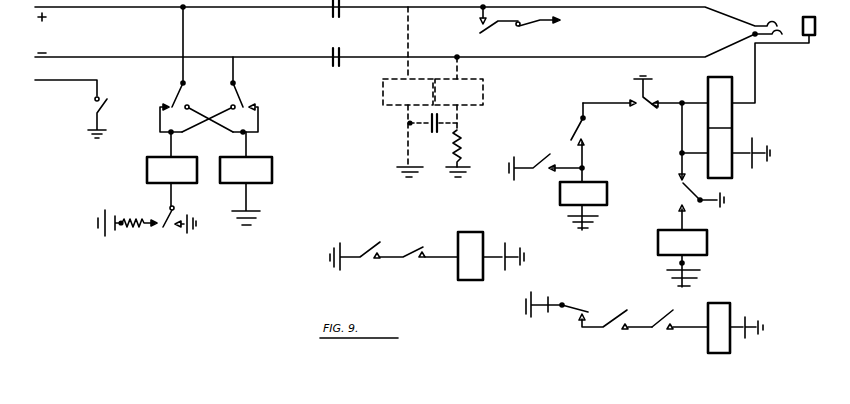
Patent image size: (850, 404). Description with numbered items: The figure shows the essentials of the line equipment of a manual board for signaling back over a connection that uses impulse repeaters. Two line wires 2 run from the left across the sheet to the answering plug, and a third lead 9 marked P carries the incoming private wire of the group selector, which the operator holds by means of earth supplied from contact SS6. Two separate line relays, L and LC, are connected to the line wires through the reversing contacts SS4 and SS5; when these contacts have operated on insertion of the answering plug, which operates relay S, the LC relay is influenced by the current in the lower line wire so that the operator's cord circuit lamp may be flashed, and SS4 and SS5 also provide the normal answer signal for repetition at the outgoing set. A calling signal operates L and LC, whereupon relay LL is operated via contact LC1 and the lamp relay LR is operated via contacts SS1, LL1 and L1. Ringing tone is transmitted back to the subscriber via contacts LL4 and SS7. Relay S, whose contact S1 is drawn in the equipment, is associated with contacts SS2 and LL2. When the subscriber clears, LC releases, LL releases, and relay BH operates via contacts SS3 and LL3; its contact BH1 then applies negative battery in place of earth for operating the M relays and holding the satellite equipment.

The line pair 2 is at (62, 53).
The P lead 9 is at (63, 88).
The SS4 contact SS4 is at (186, 69).
The SS5 contact SS5 is at (225, 95).
The SS6 contact SS6 is at (86, 117).
The LC1 contact LC1 is at (139, 170).
The L1 contact L1 is at (296, 163).
The BH1 contact BH1 is at (460, 299).
The SS3 contact SS3 is at (357, 239).
The LL3 contact LL3 is at (411, 239).
The LL4 contact LL4 is at (741, 242).
The SS7 contact SS7 is at (548, 199).
The S1 contact S1 is at (753, 83).
The SS2 contact SS2 is at (645, 102).
The LL2 contact LL2 is at (589, 124).
The lamp relay LR is at (644, 321).
The SS1 contact SS1 is at (580, 296).
The LL1 contact LL1 is at (609, 342).